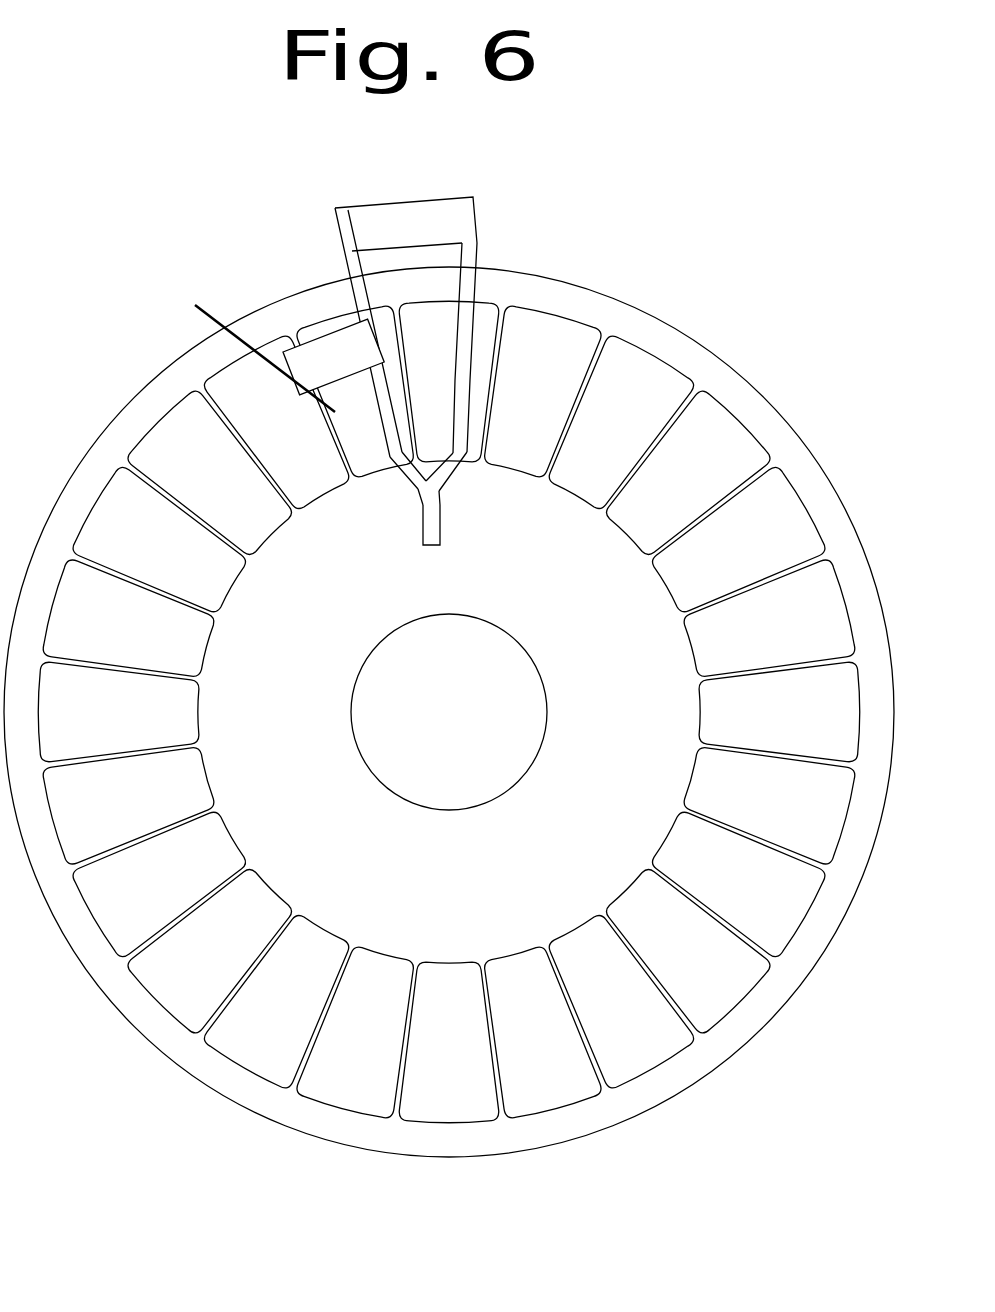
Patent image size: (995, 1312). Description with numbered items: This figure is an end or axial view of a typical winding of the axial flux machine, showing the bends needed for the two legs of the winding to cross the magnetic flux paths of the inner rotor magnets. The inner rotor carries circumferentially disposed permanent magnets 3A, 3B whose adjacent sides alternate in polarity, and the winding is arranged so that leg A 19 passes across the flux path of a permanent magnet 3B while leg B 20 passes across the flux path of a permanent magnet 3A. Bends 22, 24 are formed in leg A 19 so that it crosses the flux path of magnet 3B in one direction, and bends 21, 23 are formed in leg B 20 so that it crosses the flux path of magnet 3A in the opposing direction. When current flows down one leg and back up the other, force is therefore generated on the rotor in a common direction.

The permanent magnet 3A is at (335, 412).
The permanent magnet 3B is at (433, 317).
The leg A 19 is at (360, 303).
The leg B 20 is at (463, 288).
The bend 21 is at (433, 494).
The bend 22 is at (421, 504).
The bend 23 is at (463, 461).
The bend 24 is at (391, 461).